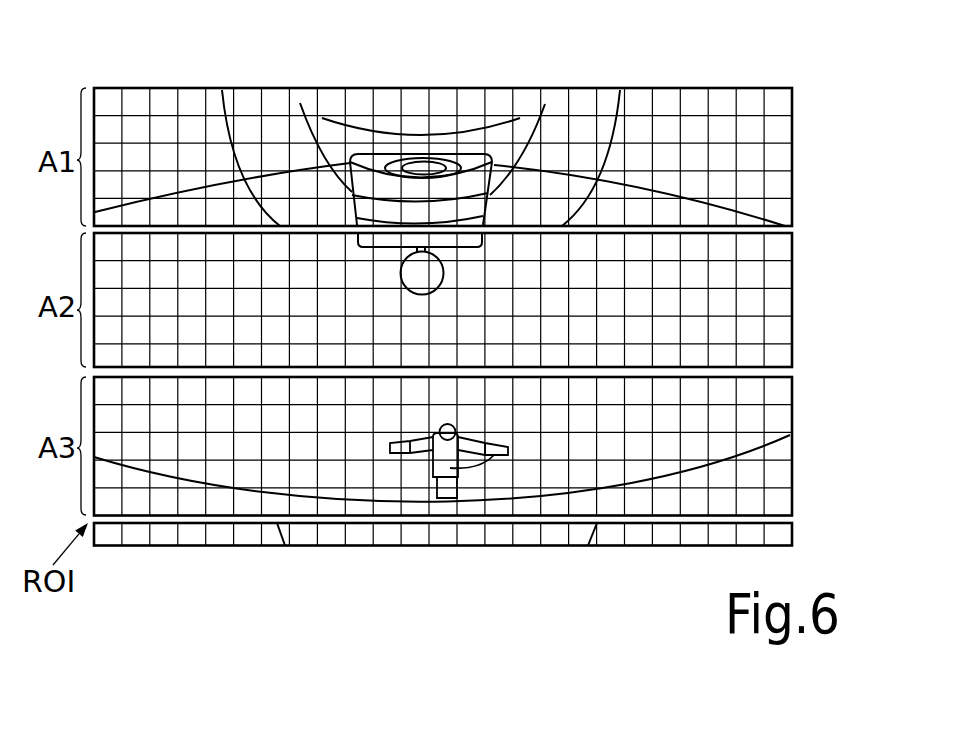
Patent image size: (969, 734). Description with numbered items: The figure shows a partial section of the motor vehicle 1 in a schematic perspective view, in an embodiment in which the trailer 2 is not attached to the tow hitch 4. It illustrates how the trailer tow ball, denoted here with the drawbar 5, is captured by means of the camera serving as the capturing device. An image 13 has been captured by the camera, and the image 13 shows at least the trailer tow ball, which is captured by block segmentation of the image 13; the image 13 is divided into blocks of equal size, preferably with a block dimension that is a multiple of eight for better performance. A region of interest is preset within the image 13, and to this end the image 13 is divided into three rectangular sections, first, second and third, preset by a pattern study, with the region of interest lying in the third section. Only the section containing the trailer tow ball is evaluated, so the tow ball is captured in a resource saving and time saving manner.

The motor vehicle 1 is at (768, 535).
The trailer 2 is at (578, 135).
The tow hitch 4 is at (507, 445).
The drawbar 5 is at (448, 423).
The image 13 is at (809, 166).